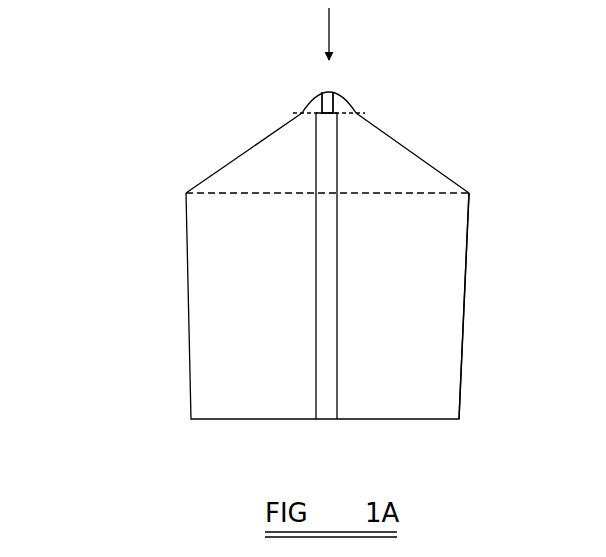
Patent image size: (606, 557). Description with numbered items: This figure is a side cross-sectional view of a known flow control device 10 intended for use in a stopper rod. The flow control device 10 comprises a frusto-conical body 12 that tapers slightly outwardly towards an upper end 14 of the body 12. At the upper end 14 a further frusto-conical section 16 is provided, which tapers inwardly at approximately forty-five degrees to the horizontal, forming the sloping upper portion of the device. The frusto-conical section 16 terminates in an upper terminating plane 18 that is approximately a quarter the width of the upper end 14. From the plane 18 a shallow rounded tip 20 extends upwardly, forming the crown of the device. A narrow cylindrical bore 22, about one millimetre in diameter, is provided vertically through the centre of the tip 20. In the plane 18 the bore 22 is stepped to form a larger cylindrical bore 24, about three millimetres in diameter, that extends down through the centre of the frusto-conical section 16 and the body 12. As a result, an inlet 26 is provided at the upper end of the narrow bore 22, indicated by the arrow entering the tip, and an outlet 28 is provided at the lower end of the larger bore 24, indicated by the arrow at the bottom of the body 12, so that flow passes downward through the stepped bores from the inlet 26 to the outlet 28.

The flow control device 10 is at (317, 230).
The frusto-conical body 12 is at (427, 303).
The upper end 14 is at (469, 193).
The frusto-conical section 16 is at (373, 156).
The upper terminating plane 18 is at (362, 114).
The rounded tip 20 is at (346, 108).
The narrow cylindrical bore 22 is at (332, 104).
The larger cylindrical bore 24 is at (322, 157).
The inlet 26 is at (334, 90).
The outlet 28 is at (326, 425).